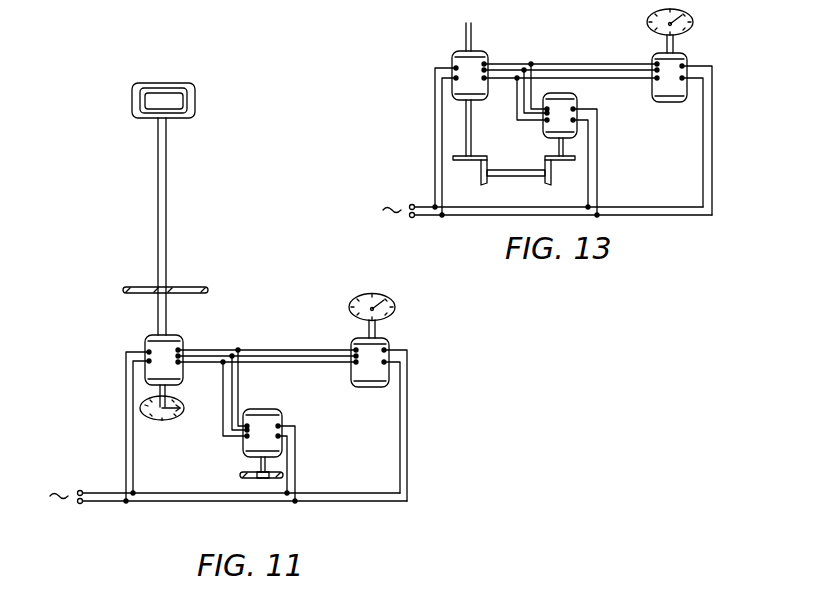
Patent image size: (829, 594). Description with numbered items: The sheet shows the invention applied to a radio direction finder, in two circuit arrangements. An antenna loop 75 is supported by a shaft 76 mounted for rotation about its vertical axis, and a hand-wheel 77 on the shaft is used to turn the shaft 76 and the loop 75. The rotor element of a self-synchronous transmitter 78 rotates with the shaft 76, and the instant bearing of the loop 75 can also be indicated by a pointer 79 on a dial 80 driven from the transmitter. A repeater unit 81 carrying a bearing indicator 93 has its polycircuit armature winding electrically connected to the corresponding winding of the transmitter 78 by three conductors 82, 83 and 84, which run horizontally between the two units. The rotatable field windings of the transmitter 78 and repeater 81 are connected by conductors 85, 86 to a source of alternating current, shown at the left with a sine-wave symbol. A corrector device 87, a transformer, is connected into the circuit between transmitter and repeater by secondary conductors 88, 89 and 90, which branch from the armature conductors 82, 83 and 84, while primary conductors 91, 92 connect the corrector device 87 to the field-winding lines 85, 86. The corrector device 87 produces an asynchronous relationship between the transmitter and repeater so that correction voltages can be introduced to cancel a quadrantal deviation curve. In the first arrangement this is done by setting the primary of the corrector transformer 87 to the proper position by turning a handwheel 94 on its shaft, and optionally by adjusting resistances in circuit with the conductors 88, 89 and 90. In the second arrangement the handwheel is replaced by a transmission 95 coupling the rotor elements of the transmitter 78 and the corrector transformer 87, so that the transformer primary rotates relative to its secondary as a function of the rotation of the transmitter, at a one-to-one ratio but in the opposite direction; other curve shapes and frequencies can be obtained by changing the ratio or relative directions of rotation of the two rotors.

In FIG. 11, the antenna loop 75 is at (131, 97).
In FIG. 11, the shaft 76 is at (157, 193).
In FIG. 13, the shaft 76 is at (465, 37).
In FIG. 11, the hand-wheel 77 is at (140, 286).
In FIG. 11, the self-synchronous transmitter 78 is at (144, 347).
In FIG. 13, the self-synchronous transmitter 78 is at (452, 61).
In FIG. 11, the pointer 79 is at (158, 391).
In FIG. 11, the dial 80 is at (171, 422).
In FIG. 11, the repeater unit 81 is at (351, 348).
In FIG. 13, the repeater unit 81 is at (688, 61).
In FIG. 11, the conductor 82 is at (250, 349).
In FIG. 13, the conductor 82 is at (548, 64).
In FIG. 11, the conductor 83 is at (263, 358).
In FIG. 13, the conductor 83 is at (597, 70).
In FIG. 11, the conductor 84 is at (302, 362).
In FIG. 13, the conductor 84 is at (626, 78).
In FIG. 11, the conductor 85 is at (341, 488).
In FIG. 13, the conductor 85 is at (616, 213).
In FIG. 11, the conductor 86 is at (344, 502).
In FIG. 13, the conductor 86 is at (662, 207).
In FIG. 11, the corrector device 87 is at (280, 418).
In FIG. 13, the corrector device 87 is at (578, 102).
In FIG. 11, the secondary conductor 88 is at (237, 381).
In FIG. 13, the secondary conductor 88 is at (530, 89).
In FIG. 11, the secondary conductor 89 is at (231, 400).
In FIG. 13, the secondary conductor 89 is at (524, 105).
In FIG. 11, the secondary conductor 90 is at (222, 418).
In FIG. 13, the secondary conductor 90 is at (517, 125).
In FIG. 11, the primary conductor 91 is at (296, 441).
In FIG. 13, the primary conductor 91 is at (598, 137).
In FIG. 11, the primary conductor 92 is at (289, 464).
In FIG. 13, the primary conductor 92 is at (590, 160).
In FIG. 11, the bearing indicator 93 is at (356, 298).
In FIG. 13, the bearing indicator 93 is at (648, 26).
In FIG. 11, the handwheel 94 is at (243, 472).
In FIG. 13, the transmission 95 is at (525, 165).